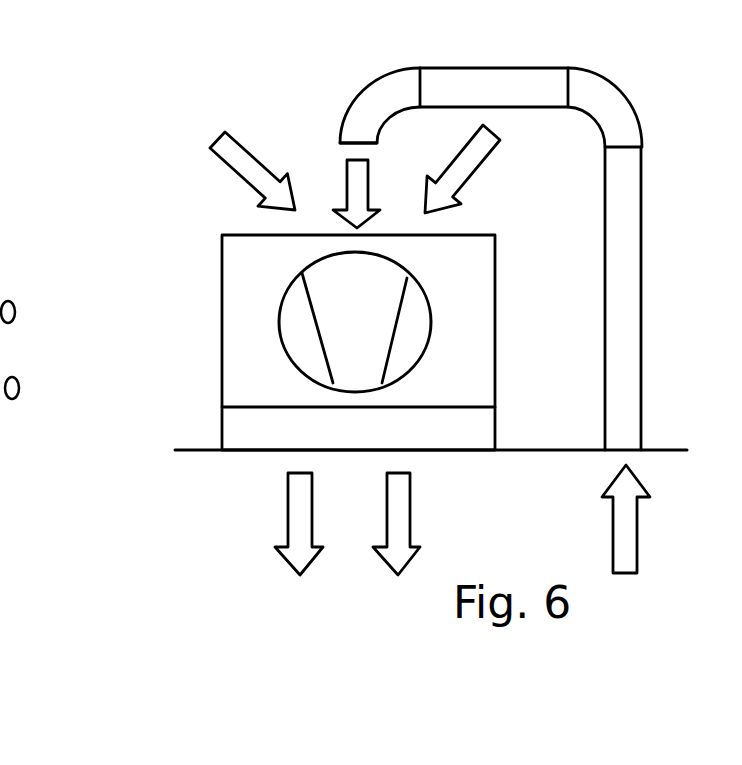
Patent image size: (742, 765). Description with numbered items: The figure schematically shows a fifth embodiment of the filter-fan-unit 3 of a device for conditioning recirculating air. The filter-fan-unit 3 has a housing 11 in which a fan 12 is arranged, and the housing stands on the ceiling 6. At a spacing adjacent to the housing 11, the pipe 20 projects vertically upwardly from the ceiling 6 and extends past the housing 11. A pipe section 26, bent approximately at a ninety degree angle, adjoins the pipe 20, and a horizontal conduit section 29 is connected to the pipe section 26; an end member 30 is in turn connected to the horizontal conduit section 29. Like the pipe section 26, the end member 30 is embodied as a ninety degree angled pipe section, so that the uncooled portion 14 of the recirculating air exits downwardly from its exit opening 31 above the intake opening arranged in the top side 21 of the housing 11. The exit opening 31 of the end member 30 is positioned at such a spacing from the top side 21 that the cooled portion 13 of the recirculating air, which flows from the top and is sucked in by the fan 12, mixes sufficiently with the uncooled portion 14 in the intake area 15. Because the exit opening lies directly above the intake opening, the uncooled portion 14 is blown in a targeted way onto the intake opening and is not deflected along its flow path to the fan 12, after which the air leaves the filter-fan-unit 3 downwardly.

The filter-fan-unit 3 is at (215, 88).
The ceiling 6 is at (670, 450).
The housing 11 is at (222, 280).
The fan 12 is at (338, 297).
The cooled portion of the recirculating air 13 is at (238, 157).
The uncooled portion of the recirculating air 14 is at (357, 185).
The intake area 15 is at (387, 220).
The pipe 20 is at (627, 302).
The top side 21 is at (263, 235).
The pipe section 26 is at (603, 102).
The horizontal conduit section 29 is at (503, 85).
The end member 30 is at (383, 100).
The exit opening 31 is at (360, 140).